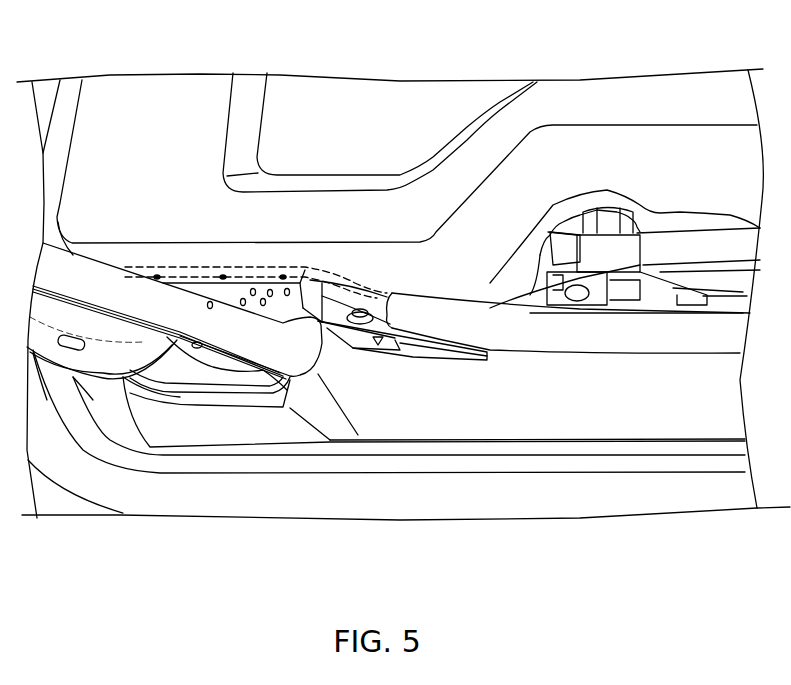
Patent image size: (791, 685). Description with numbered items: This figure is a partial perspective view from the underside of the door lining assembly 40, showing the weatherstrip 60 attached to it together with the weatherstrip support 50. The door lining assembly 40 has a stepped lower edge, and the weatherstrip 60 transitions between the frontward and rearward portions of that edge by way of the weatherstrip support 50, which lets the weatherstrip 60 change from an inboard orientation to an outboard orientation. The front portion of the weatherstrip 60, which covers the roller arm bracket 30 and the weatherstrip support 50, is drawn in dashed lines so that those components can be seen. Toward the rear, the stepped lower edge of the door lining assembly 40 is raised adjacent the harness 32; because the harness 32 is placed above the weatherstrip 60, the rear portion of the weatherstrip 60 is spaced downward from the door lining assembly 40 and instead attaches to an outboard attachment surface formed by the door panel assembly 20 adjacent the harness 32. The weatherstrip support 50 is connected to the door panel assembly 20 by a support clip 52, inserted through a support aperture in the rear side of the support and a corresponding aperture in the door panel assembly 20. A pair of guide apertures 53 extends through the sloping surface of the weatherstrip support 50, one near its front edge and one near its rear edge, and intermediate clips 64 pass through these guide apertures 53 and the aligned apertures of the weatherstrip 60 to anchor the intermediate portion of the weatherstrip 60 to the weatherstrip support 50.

The door panel assembly 20 is at (90, 480).
The roller arm bracket 30 is at (85, 277).
The harness 32 is at (667, 217).
The door lining assembly 40 is at (530, 193).
The weatherstrip support 50 is at (447, 357).
The support clip 52 is at (383, 340).
The guide apertures 53 is at (353, 345).
The weatherstrip 60 is at (620, 355).
The intermediate clips 64 is at (363, 305).